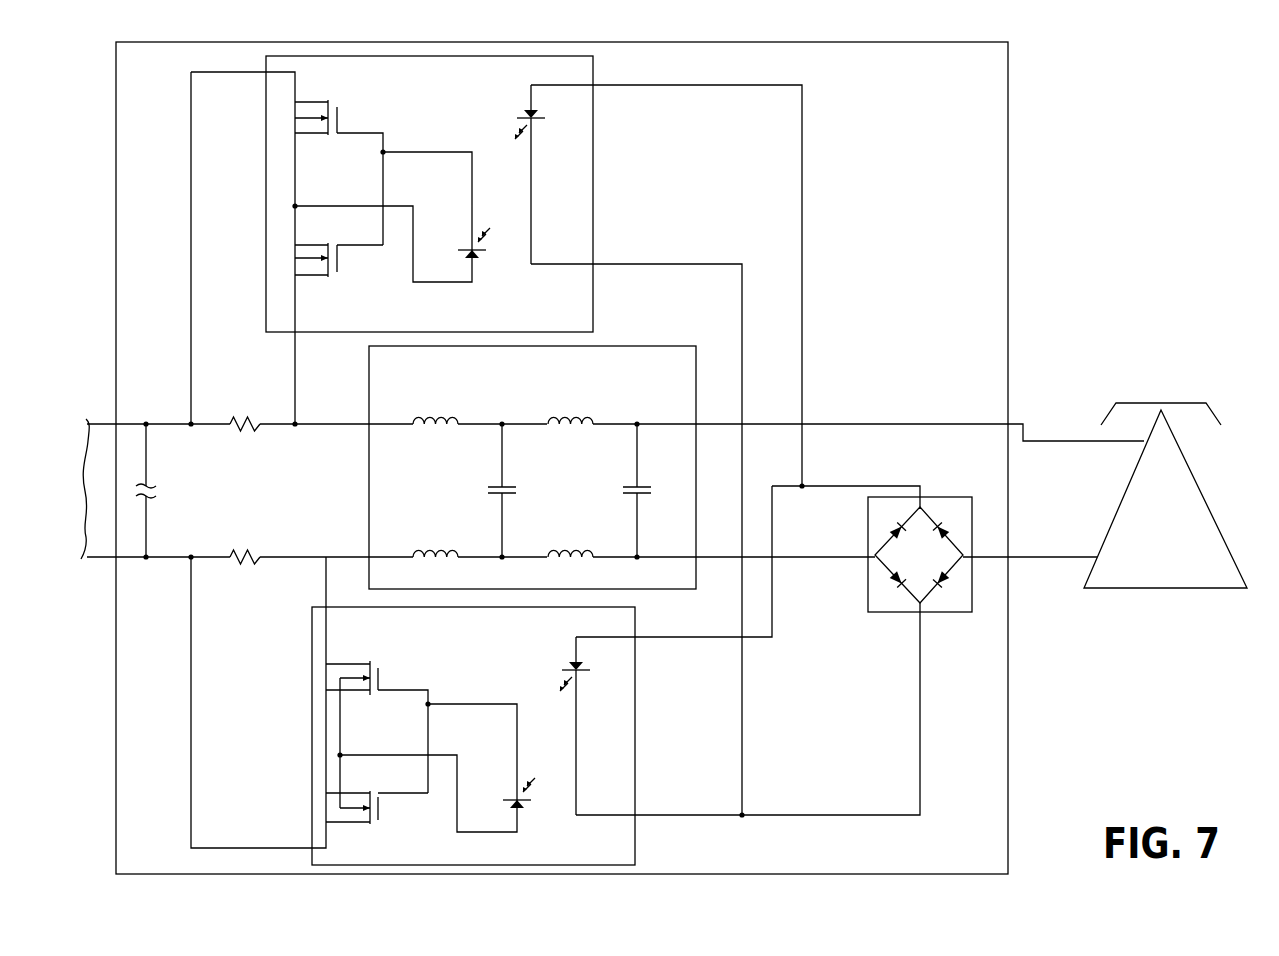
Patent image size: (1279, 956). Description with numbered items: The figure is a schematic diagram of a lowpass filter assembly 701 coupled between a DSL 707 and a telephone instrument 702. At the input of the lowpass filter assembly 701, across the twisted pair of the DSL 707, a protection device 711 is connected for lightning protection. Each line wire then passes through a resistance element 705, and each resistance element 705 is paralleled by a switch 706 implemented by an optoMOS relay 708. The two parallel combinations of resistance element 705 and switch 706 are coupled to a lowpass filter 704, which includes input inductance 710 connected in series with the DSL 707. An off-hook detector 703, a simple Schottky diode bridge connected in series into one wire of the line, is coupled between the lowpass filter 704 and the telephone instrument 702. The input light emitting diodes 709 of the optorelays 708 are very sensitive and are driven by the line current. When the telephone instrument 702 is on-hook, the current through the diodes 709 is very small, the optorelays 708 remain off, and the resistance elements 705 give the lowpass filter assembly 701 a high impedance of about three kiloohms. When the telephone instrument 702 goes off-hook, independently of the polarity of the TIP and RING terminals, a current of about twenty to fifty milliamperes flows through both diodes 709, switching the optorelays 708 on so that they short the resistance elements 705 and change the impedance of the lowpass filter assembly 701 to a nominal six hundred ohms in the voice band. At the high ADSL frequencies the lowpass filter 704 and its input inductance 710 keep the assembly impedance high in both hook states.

The lowpass filter assembly 701 is at (1021, 133).
The telephone instrument 702 is at (1189, 474).
The off-hook detector 703 is at (958, 493).
The lowpass filter 704 is at (369, 500).
The resistance element 705 is at (236, 432).
The switch 706 is at (594, 66).
The DSL 707 is at (90, 489).
The optoMOS relay 708 is at (339, 113).
The light emitting diode 709 is at (536, 126).
The input inductance 710 is at (436, 430).
The protection device 711 is at (153, 497).